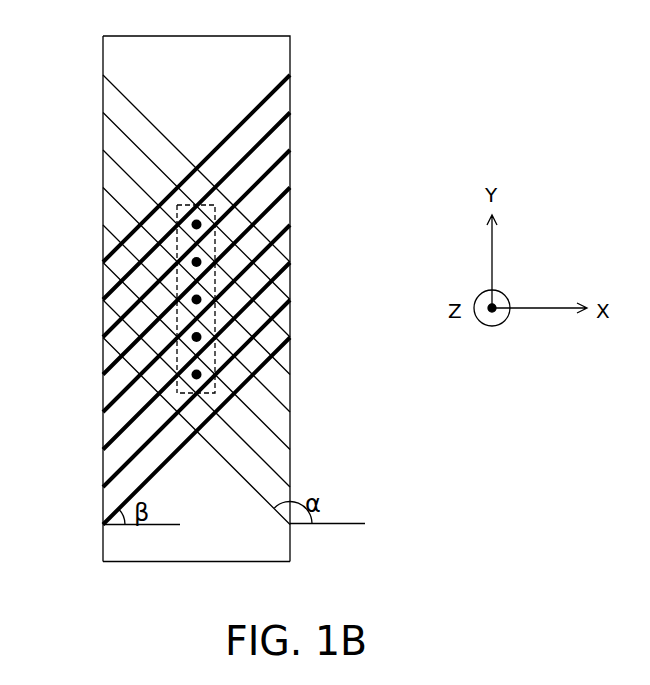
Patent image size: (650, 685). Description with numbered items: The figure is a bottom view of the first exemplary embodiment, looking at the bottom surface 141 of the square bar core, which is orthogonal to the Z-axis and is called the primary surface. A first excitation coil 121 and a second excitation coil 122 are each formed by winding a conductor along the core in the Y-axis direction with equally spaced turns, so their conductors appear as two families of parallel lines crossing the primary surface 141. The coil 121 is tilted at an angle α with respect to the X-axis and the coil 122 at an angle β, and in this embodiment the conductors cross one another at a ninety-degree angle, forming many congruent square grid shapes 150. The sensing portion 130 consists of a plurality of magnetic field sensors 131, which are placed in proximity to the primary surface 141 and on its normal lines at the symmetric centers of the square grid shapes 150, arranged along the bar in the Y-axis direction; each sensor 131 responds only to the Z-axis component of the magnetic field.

The first excitation coil 121 is at (266, 452).
The second excitation coil 122 is at (127, 453).
The sensing portion 130 is at (177, 275).
The magnetic field sensor 131 is at (178, 369).
The bottom surface 141 is at (202, 562).
The square grid shapes 150 is at (200, 356).